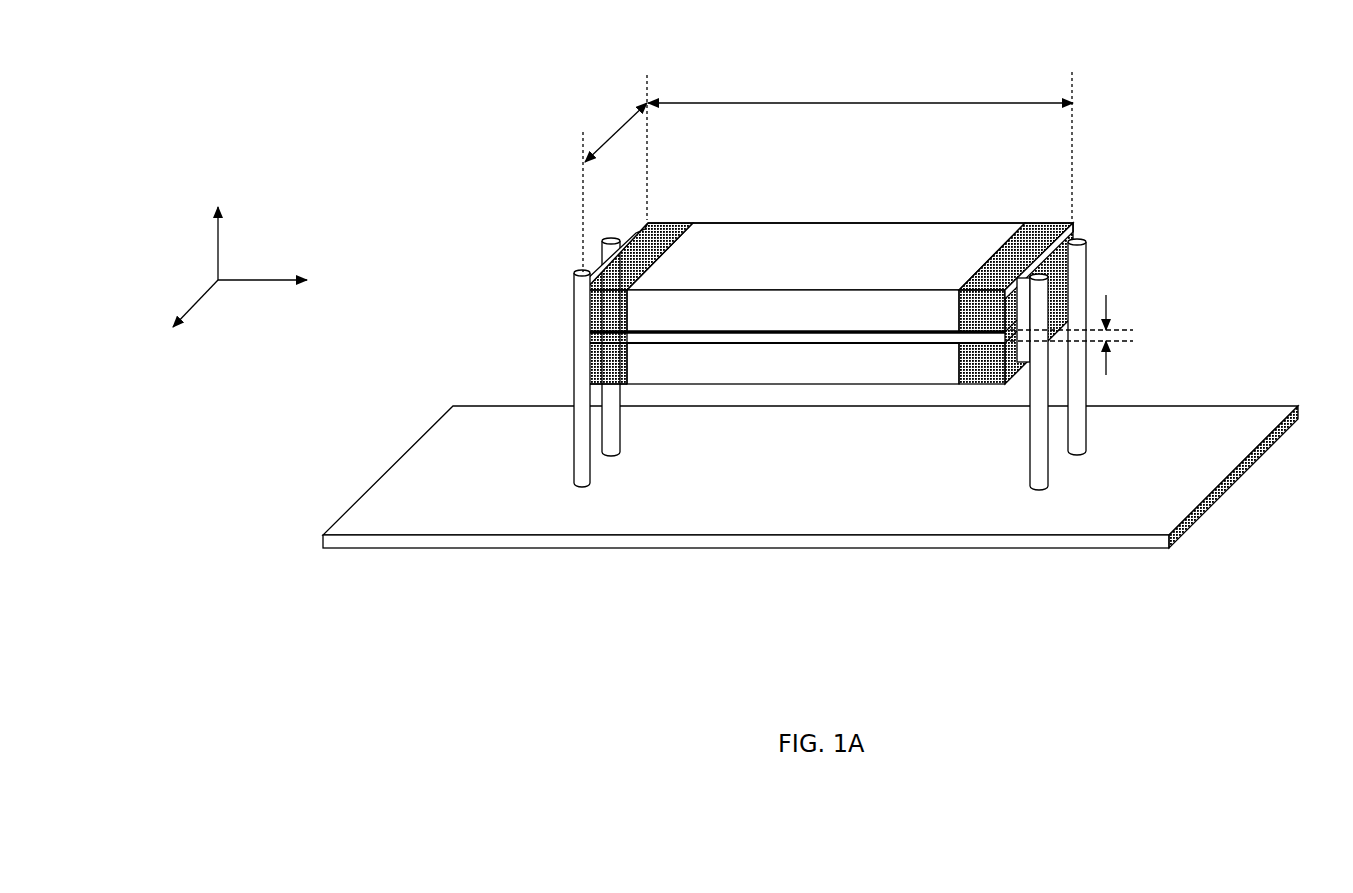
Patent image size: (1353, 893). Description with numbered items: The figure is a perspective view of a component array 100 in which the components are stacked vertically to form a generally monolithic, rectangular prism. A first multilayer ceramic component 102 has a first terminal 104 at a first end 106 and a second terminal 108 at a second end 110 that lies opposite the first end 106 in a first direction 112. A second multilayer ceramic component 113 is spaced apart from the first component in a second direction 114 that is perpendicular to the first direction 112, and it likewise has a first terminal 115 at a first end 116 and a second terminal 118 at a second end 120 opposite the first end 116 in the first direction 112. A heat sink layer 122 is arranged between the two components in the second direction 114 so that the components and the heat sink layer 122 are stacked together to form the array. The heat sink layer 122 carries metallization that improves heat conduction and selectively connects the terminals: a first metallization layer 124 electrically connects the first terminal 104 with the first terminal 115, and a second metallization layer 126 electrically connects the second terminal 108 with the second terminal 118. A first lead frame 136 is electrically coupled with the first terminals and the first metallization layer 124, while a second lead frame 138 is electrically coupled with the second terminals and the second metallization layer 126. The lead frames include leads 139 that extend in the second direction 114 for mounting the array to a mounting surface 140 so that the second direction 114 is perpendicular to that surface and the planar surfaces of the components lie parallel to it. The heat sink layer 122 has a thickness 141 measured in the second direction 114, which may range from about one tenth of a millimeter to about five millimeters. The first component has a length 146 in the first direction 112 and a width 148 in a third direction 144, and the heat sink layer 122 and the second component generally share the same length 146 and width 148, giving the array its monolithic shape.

The component array 100 is at (428, 158).
The first multilayer ceramic component 102 is at (855, 220).
The first terminal 104 is at (673, 228).
The first end 106 is at (647, 228).
The second terminal 108 is at (1037, 223).
The second end 110 is at (1074, 222).
The first direction 112 is at (291, 287).
The second multilayer ceramic component 113 is at (741, 388).
The second direction 114 is at (215, 229).
The first terminal 115 is at (574, 390).
The first end 116 is at (584, 370).
The second terminal 118 is at (980, 386).
The second end 120 is at (1018, 375).
The heat sink layer 122 is at (645, 330).
The first metallization layer 124 is at (585, 339).
The second metallization layer 126 is at (981, 335).
The first lead frame 136 is at (598, 240).
The second lead frame 138 is at (1088, 246).
The leads 139 is at (573, 463).
The mounting surface 140 is at (816, 487).
The thickness 141 is at (1110, 305).
The third direction 144 is at (177, 324).
The length 146 is at (790, 100).
The width 148 is at (613, 130).